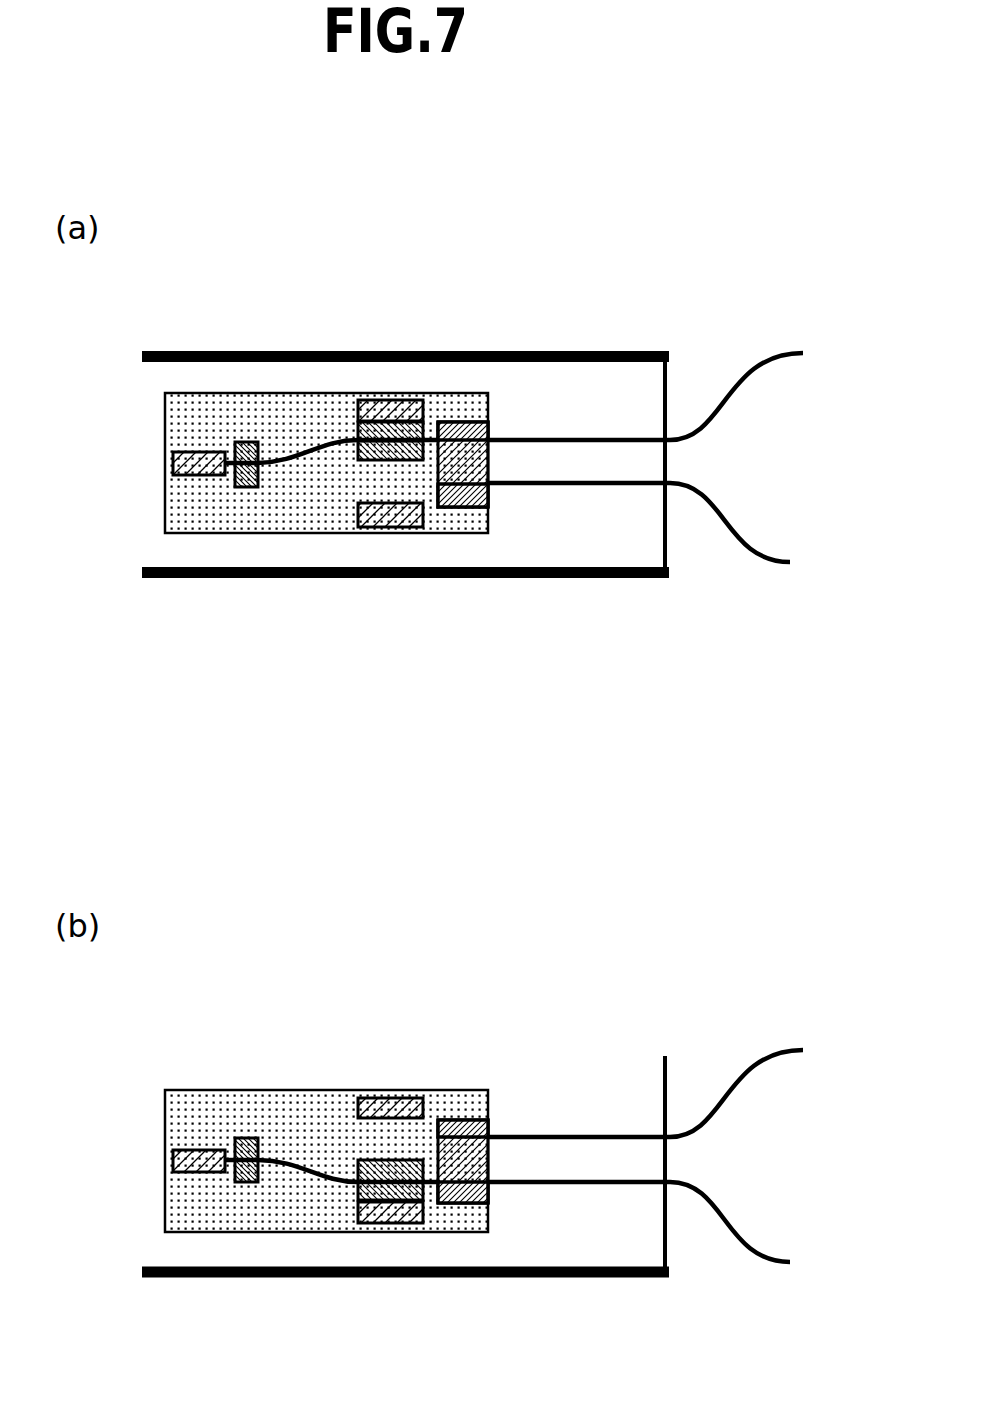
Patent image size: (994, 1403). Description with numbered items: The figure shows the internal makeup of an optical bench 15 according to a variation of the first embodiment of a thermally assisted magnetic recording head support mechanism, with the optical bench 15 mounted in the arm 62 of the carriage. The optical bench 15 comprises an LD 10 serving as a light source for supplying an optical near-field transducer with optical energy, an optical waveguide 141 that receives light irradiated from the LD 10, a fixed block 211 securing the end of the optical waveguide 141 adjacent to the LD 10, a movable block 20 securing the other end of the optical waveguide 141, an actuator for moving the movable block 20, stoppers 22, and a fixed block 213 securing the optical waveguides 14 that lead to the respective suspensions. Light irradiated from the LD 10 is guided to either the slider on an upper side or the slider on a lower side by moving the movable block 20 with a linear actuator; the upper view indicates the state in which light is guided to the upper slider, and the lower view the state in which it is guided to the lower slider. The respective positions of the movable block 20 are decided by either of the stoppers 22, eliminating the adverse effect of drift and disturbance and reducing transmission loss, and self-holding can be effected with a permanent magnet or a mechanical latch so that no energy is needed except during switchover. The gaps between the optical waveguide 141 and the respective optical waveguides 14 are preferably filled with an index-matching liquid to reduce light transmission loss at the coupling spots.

The LD 10 is at (200, 476).
The optical waveguides 14 is at (748, 375).
The optical bench 15 is at (195, 405).
The movable block 20 is at (350, 443).
The stoppers 22 is at (403, 402).
The arm 62 is at (565, 410).
The optical waveguide 141 is at (332, 438).
The fixed block 211 is at (236, 443).
The fixed block 213 is at (474, 507).